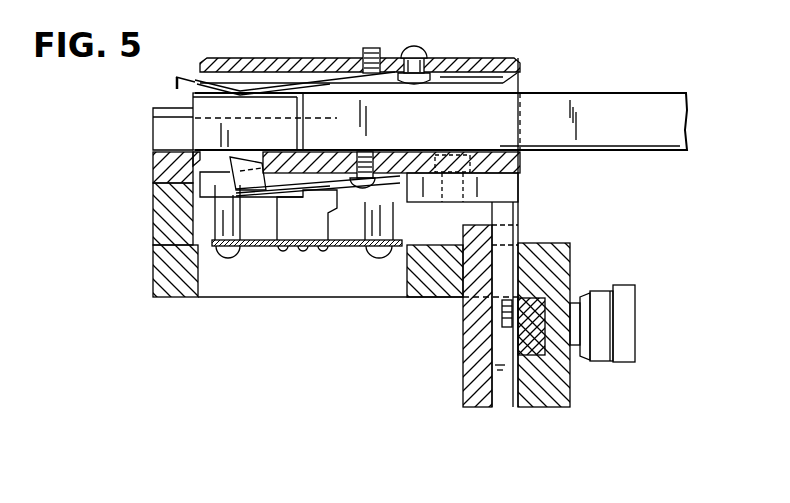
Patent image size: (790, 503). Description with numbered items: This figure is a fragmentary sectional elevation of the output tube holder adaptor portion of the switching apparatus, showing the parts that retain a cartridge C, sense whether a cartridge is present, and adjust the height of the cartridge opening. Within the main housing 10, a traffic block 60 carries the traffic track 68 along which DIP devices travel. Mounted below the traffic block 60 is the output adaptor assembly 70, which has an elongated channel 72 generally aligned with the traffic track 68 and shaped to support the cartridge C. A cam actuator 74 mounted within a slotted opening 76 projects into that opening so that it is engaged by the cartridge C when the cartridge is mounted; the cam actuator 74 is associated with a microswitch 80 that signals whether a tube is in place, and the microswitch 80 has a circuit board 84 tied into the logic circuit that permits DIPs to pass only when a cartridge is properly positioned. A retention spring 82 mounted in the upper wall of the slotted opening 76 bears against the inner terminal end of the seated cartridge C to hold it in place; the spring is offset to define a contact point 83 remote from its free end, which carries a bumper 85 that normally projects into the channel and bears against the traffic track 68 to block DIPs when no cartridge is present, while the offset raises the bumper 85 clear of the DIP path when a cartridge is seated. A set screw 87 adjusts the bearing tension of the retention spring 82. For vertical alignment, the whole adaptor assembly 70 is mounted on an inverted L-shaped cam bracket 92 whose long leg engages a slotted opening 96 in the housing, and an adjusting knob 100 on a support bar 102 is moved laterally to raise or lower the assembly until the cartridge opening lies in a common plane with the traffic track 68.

The main housing 10 is at (167, 257).
The traffic block 60 is at (157, 152).
The traffic track 68 is at (163, 137).
The output adaptor assembly 70 is at (498, 55).
The elongated channel 72 is at (508, 87).
The cam actuator 74 is at (233, 173).
The slotted opening 76 is at (158, 182).
The microswitch 80 is at (298, 227).
The retention spring 82 is at (289, 72).
The contact point 83 is at (240, 92).
The circuit board 84 is at (357, 247).
The bumper 85 is at (172, 87).
The set screw 87 is at (380, 50).
The cam bracket 92 is at (500, 210).
The slotted opening 96 is at (502, 320).
The adjusting knob 100 is at (628, 340).
The support bar 102 is at (533, 350).
The cartridge C is at (625, 97).